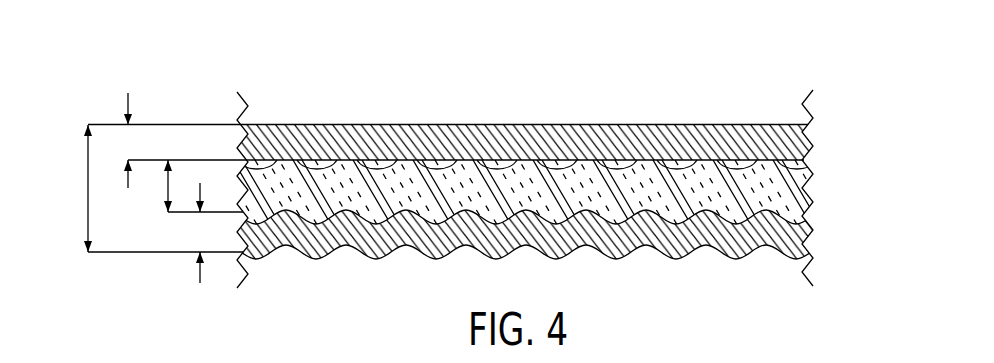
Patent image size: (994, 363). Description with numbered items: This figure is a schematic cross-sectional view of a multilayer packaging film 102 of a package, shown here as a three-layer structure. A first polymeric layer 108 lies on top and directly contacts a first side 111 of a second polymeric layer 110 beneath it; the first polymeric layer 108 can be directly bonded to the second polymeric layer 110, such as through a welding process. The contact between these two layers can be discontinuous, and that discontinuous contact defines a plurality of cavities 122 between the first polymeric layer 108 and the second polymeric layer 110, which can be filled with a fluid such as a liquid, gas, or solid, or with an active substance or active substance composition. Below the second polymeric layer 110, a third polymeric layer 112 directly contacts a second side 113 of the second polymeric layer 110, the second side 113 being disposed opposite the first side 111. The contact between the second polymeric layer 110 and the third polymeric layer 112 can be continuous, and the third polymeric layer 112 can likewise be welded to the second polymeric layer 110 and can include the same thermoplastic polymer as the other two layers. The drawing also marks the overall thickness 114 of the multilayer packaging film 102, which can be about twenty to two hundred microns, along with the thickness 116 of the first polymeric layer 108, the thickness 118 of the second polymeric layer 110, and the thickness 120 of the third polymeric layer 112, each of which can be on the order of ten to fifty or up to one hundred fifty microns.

The multilayer packaging film 102 is at (288, 78).
The first polymeric layer 108 is at (800, 136).
The second polymeric layer 110 is at (789, 196).
The first side 111 is at (802, 161).
The third polymeric layer 112 is at (798, 234).
The second side 113 is at (792, 221).
The thickness of the multilayer packaging film 114 is at (87, 168).
The thickness of the first polymeric layer 116 is at (130, 112).
The thickness of the second polymeric layer 118 is at (167, 188).
The thickness of the third polymeric layer 120 is at (199, 276).
The cavities 122 is at (612, 162).